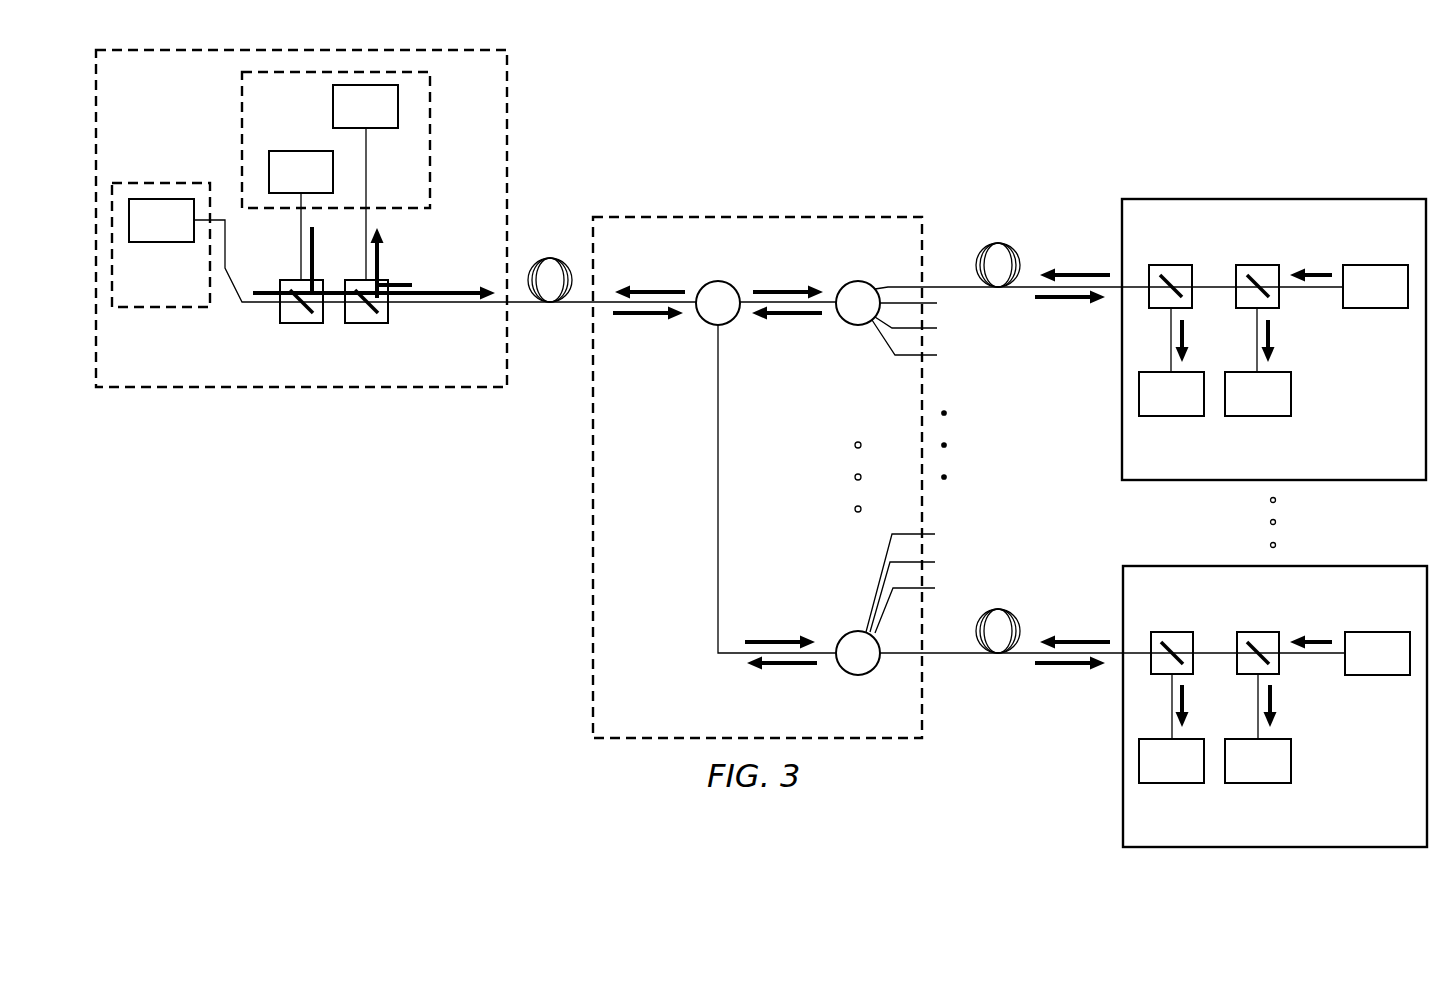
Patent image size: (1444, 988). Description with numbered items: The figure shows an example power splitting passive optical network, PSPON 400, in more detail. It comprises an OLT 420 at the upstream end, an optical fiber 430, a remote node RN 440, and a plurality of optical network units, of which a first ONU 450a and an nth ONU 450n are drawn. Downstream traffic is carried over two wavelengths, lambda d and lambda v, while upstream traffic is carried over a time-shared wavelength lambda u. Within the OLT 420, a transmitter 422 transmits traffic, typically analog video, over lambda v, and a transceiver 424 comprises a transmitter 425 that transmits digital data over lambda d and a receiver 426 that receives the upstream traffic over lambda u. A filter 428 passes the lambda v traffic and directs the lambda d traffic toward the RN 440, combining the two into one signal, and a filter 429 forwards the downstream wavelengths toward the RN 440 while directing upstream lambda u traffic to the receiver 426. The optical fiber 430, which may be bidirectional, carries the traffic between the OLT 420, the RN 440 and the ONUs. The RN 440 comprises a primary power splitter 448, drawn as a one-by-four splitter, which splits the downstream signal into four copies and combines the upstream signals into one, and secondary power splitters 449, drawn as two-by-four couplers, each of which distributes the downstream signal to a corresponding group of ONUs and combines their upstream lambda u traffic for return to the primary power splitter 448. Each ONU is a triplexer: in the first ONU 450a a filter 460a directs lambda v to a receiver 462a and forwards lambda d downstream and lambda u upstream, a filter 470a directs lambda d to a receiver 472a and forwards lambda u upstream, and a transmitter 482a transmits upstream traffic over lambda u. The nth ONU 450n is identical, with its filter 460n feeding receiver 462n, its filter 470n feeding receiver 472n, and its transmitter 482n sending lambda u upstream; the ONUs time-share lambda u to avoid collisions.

The PSPON 400 is at (1166, 110).
The OLT 420 is at (218, 392).
The transmitter 422 is at (162, 243).
The transceiver 424 is at (236, 118).
The transmitter 425 is at (290, 150).
The receiver 426 is at (382, 128).
The filter 428 is at (295, 323).
The filter 429 is at (372, 323).
The optical fiber 430 is at (548, 258).
The RN 440 is at (779, 212).
The primary power splitter 448 is at (713, 282).
The secondary power splitter 449 is at (863, 282).
The ONU 450a is at (1341, 194).
The ONU 450n is at (1348, 854).
The filter 460a is at (1172, 265).
The filter 460n is at (1172, 631).
The filter 470a is at (1259, 265).
The filter 470n is at (1259, 631).
The receiver 462a is at (1182, 416).
The receiver 462n is at (1182, 783).
The receiver 472a is at (1267, 416).
The receiver 472n is at (1267, 783).
The transmitter 482a is at (1377, 308).
The transmitter 482n is at (1377, 675).